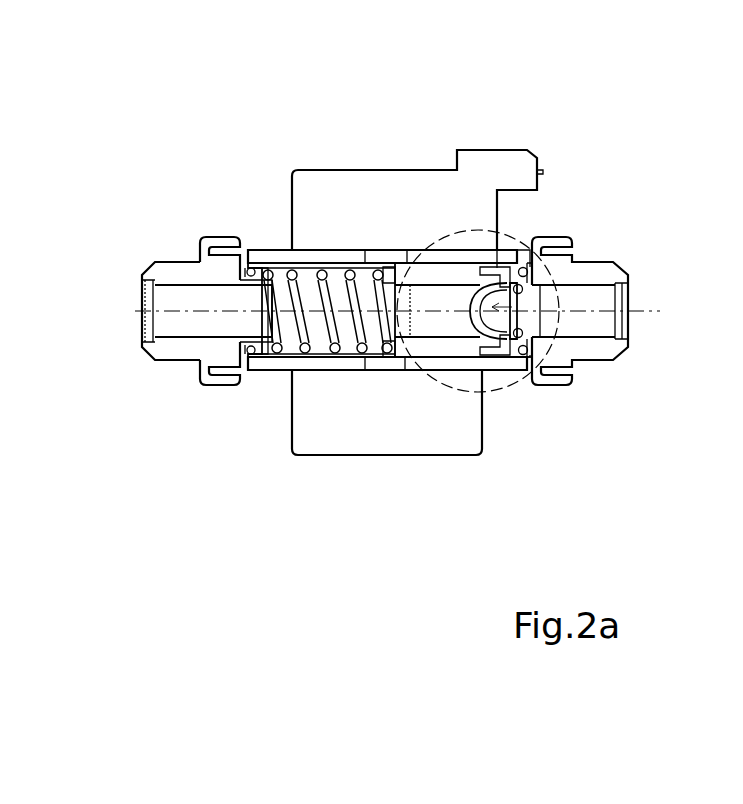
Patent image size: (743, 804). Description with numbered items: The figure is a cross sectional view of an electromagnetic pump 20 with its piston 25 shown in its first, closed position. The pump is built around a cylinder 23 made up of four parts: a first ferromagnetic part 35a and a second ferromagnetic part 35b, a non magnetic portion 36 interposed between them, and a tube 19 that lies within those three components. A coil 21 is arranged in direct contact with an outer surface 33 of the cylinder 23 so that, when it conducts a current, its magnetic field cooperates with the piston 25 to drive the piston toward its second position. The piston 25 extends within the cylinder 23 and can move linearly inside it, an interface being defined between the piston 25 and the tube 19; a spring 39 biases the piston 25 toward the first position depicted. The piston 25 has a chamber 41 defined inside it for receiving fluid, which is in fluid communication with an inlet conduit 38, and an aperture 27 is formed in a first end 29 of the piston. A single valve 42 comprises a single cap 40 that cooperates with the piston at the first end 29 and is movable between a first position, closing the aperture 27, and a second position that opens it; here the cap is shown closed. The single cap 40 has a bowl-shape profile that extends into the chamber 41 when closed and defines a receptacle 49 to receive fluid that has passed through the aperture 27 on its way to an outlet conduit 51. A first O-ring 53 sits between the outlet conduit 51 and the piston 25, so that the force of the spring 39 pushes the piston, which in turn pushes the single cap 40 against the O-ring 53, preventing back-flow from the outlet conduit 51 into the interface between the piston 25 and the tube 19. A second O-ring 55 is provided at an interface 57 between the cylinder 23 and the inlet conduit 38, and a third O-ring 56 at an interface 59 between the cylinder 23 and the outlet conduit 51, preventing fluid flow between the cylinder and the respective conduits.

The electromagnetic pump 20 is at (560, 147).
The coil 21 is at (322, 182).
The tube 19 is at (420, 264).
The cylinder 23 is at (496, 273).
The piston 25 is at (448, 345).
The aperture 27 is at (522, 282).
The first end 29 is at (500, 352).
The outer surface 33 is at (346, 252).
The first ferromagnetic part 35a is at (286, 268).
The second ferromagnetic part 35b is at (525, 250).
The non magnetic portion 36 is at (384, 266).
The inlet conduit 38 is at (176, 272).
The spring 39 is at (300, 330).
The single cap 40 is at (512, 293).
The chamber 41 is at (457, 303).
The single valve 42 is at (520, 301).
The receptacle 49 is at (520, 318).
The outlet conduit 51 is at (583, 350).
The first O-ring 53 is at (522, 335).
The second O-ring 55 is at (249, 358).
The third O-ring 56 is at (523, 355).
The interface 57 is at (245, 268).
The interface 59 is at (556, 253).